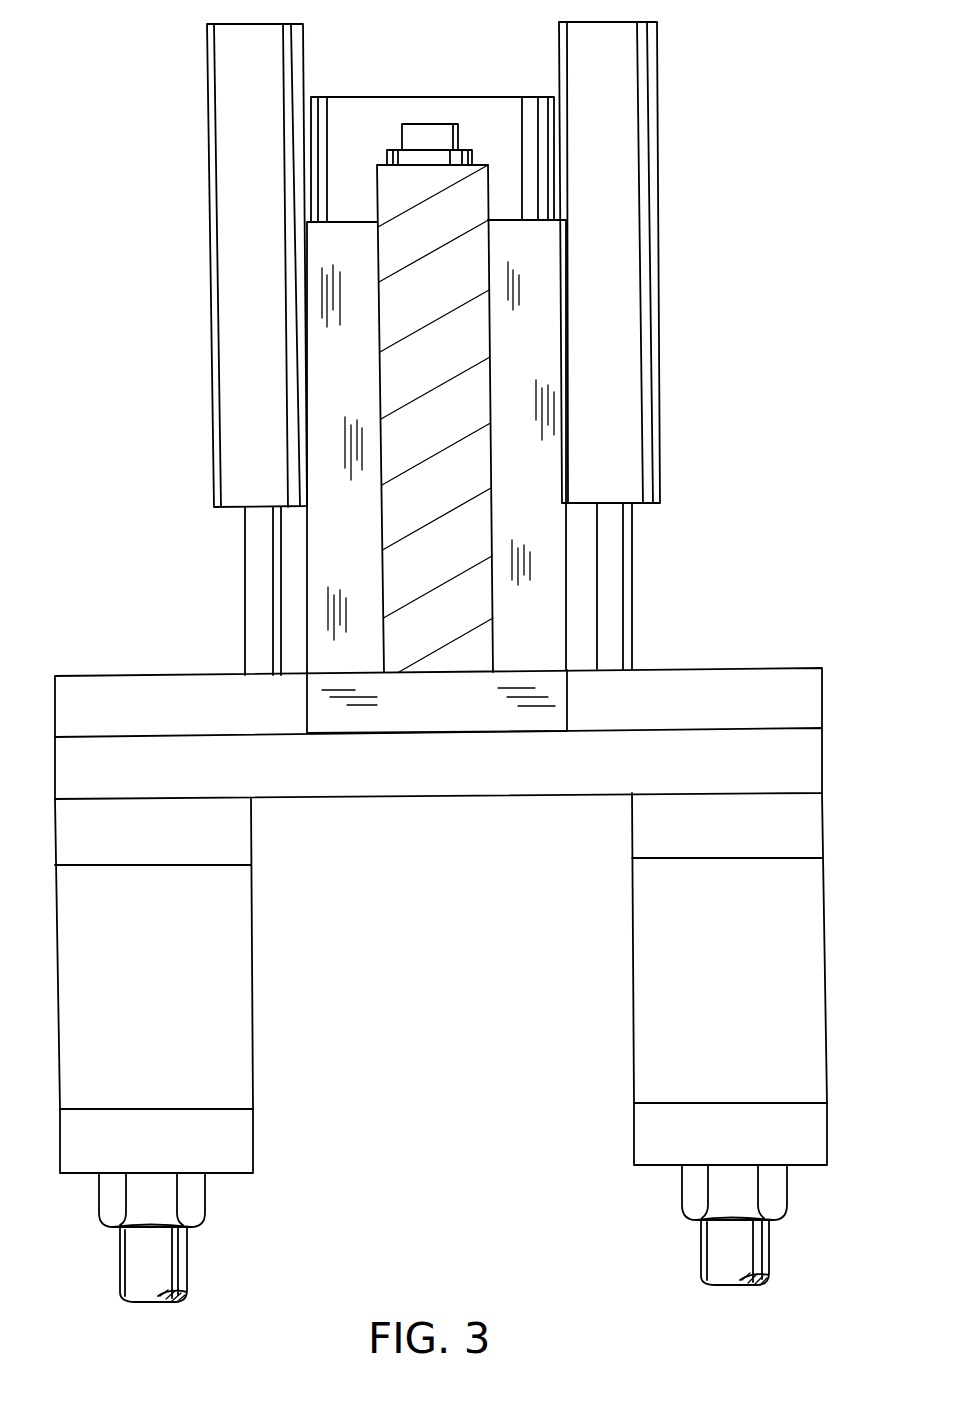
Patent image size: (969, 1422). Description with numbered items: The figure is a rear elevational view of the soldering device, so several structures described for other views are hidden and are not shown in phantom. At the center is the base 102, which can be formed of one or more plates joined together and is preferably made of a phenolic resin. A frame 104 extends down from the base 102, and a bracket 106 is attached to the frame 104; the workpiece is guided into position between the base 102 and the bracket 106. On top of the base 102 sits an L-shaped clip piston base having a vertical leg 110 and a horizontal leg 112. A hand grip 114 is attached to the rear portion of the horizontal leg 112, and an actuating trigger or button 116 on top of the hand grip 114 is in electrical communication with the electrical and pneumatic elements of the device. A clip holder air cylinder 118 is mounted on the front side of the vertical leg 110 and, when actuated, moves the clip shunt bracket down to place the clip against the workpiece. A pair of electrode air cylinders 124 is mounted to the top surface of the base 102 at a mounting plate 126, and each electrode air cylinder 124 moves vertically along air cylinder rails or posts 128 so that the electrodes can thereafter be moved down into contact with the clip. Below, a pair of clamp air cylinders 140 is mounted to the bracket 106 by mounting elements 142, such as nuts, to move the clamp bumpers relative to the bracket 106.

The base 102 is at (805, 767).
The frame 104 is at (237, 928).
The bracket 106 is at (237, 1137).
The vertical leg 110 is at (545, 612).
The horizontal leg 112 is at (462, 712).
The hand grip 114 is at (403, 565).
The actuating trigger or button 116 is at (418, 118).
The clip holder air cylinder 118 is at (510, 112).
The electrode air cylinders 124 is at (225, 150).
The mounting plate 126 is at (128, 690).
The air cylinder rail or post 128 is at (248, 524).
The clamp air cylinders 140 is at (130, 1262).
The mounting element 142 is at (190, 1200).